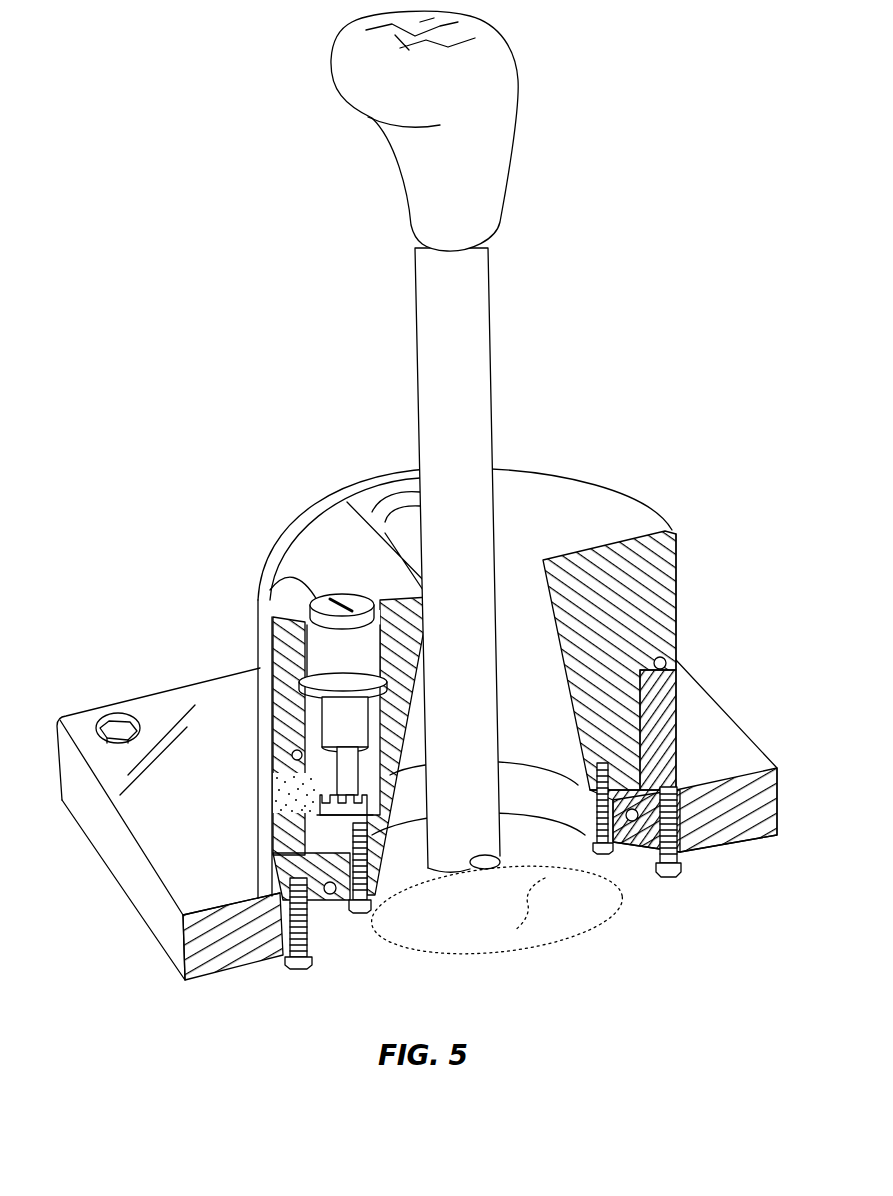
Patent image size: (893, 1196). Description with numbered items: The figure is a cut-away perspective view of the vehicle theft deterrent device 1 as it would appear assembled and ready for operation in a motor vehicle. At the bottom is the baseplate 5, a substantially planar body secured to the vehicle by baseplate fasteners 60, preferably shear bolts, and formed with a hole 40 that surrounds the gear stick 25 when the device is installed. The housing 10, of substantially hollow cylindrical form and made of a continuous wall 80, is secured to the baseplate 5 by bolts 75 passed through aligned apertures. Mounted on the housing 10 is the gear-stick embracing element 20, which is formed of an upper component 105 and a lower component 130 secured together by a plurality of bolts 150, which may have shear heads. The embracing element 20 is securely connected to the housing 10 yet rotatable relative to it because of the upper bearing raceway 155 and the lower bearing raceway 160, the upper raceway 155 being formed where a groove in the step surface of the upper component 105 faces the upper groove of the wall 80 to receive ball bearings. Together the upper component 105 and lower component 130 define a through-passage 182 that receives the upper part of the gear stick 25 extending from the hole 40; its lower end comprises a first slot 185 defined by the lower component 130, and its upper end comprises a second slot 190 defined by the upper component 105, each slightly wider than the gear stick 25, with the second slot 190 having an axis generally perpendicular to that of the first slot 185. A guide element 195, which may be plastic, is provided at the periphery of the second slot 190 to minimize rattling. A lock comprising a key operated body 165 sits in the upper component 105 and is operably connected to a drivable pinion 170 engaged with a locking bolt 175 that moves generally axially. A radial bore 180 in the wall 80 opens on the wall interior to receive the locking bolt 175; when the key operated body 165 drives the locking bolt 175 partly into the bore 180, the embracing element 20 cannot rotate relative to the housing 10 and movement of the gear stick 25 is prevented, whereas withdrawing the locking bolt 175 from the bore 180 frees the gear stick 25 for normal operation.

The vehicle theft deterrent device 1 is at (127, 303).
The baseplate 5 is at (96, 864).
The housing 10 is at (262, 852).
The gear-stick embracing element 20 is at (678, 575).
The gear stick 25 is at (415, 352).
The hole 40 is at (485, 932).
The baseplate fastener 60 is at (118, 715).
The bolt 75 is at (298, 970).
The wall 80 is at (280, 890).
The upper component 105 is at (296, 550).
The lower component 130 is at (582, 824).
The bolts 150 is at (368, 912).
The upper bearing raceway 155 is at (664, 660).
The lower bearing raceway 160 is at (334, 895).
The key operated body 165 is at (262, 570).
The pinion 170 is at (325, 663).
The locking bolt 175 is at (300, 769).
The radial bore 180 is at (268, 823).
The through-passage 182 is at (519, 614).
The first slot 185 is at (496, 910).
The second slot 190 is at (402, 523).
The guide element 195 is at (368, 506).